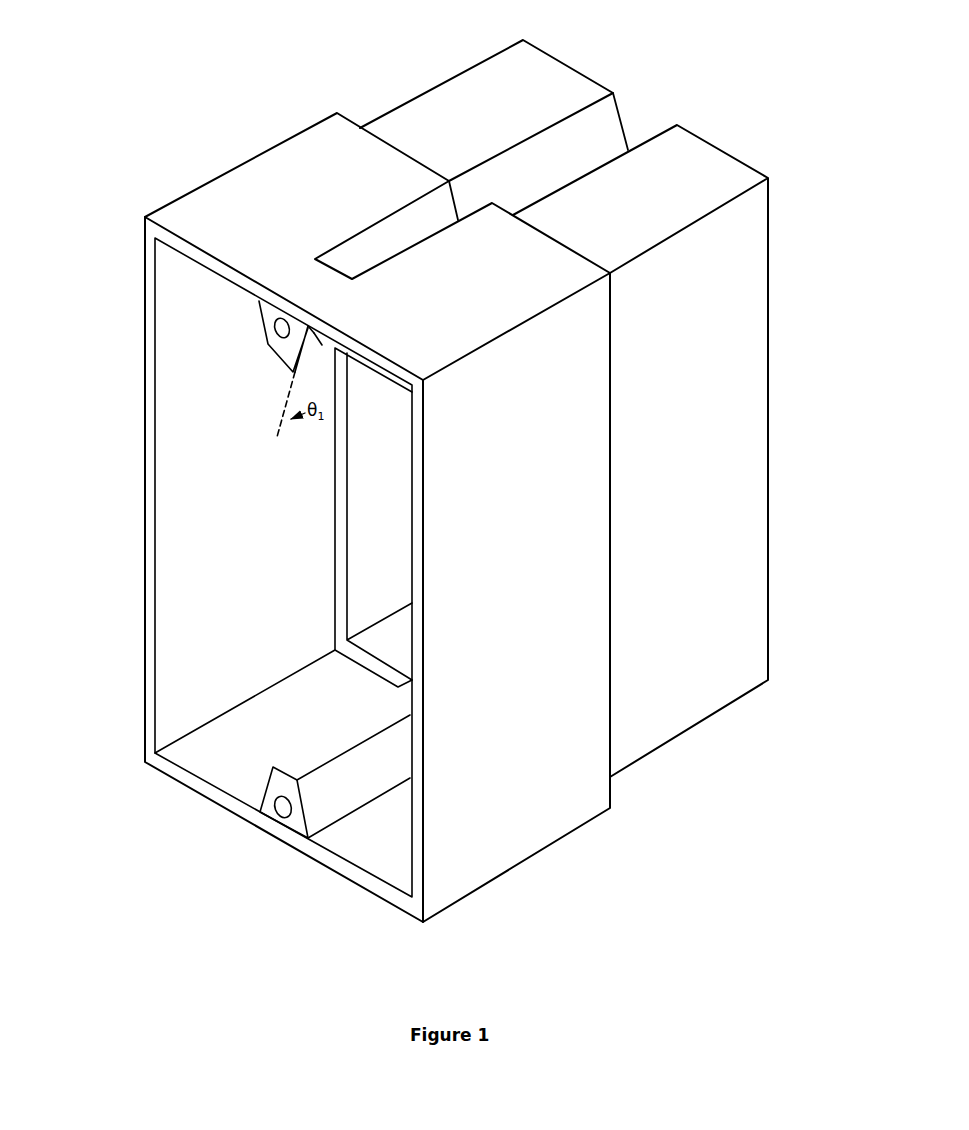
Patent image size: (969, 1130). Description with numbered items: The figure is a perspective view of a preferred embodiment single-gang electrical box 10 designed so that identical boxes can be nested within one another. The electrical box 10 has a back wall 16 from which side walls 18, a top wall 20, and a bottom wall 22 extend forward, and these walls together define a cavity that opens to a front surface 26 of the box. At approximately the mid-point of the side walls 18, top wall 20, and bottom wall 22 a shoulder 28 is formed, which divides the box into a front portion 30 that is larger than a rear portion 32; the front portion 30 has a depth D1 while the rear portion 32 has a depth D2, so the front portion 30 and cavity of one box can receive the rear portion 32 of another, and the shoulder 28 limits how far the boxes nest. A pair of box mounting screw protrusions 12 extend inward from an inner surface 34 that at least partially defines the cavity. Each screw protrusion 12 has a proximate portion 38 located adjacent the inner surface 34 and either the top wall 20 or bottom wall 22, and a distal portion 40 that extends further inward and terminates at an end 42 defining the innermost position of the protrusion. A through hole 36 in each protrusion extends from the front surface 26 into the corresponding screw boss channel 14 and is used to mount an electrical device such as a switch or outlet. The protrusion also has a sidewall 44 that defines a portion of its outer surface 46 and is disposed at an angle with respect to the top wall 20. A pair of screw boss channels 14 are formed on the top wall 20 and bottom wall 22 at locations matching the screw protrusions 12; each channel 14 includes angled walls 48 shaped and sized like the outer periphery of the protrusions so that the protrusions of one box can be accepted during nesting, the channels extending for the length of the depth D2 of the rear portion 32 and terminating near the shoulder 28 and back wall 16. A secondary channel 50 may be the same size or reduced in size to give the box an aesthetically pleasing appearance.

The single-gang electrical box 10 is at (138, 124).
The box mounting screw protrusion 12 is at (266, 339).
The screw boss channel 14 is at (470, 163).
The back wall 16 is at (773, 507).
The side wall 18 is at (143, 303).
The top wall 20 is at (237, 186).
The bottom wall 22 is at (184, 781).
The front surface 26 is at (143, 611).
The shoulder 28 is at (333, 534).
The front portion 30 is at (503, 826).
The rear portion 32 is at (725, 450).
The inner surface 34 is at (188, 412).
The through hole 36 is at (284, 345).
The proximate portion 38 is at (266, 308).
The distal portion 40 is at (286, 364).
The end 42 is at (311, 750).
The sidewall 44 is at (318, 332).
The outer surface 46 is at (327, 344).
The angled wall 48 is at (641, 137).
The secondary channel 50 is at (398, 211).
The depth of front portion D1 is at (607, 360).
The depth of rear portion D2 is at (760, 262).